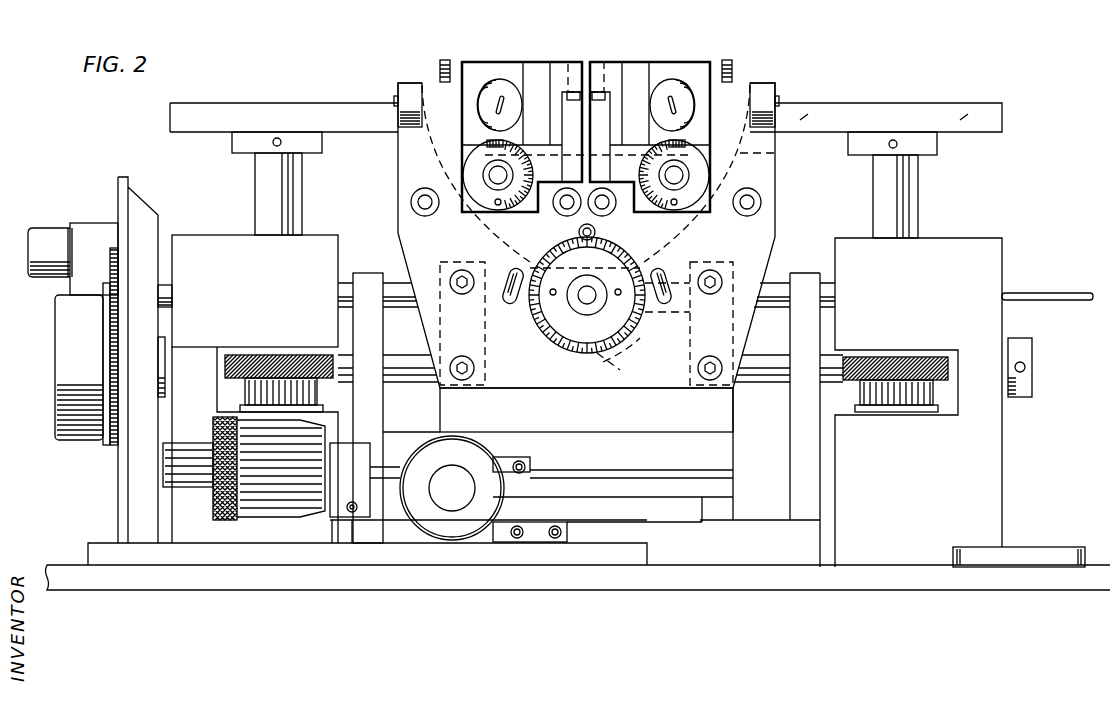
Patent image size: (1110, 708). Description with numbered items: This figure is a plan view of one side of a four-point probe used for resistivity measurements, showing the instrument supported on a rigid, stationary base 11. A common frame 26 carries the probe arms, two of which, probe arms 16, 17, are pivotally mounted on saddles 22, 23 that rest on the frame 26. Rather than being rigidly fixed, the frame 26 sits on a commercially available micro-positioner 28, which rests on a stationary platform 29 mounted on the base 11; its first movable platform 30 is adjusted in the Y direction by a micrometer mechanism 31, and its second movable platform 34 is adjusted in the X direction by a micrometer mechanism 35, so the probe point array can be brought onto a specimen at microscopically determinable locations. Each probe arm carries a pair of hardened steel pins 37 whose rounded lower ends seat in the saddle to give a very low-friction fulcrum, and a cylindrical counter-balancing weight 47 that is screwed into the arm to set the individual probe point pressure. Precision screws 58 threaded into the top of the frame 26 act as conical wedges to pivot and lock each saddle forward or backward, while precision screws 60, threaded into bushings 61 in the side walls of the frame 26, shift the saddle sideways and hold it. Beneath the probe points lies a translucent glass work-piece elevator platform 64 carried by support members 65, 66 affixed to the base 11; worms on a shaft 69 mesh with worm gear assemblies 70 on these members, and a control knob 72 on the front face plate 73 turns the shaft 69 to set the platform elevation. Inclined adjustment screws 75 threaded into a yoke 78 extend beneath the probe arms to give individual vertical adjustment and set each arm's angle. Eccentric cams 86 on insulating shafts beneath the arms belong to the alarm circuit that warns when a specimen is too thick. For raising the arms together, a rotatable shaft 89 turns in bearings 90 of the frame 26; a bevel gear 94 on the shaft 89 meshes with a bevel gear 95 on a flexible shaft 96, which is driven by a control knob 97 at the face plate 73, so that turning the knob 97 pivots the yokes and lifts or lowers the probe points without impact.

The base 11 is at (511, 579).
The probe arm 16 is at (698, 62).
The probe arm 17 is at (474, 62).
The saddle 22 is at (604, 121).
The saddle 23 is at (568, 121).
The frame 26 is at (776, 196).
The micro-positioner 28 is at (780, 458).
The stationary platform 29 is at (812, 531).
The first movable platform 30 is at (733, 497).
The micrometer mechanism 31 is at (463, 455).
The second movable platform 34 is at (722, 466).
The micrometer mechanism 35 is at (214, 505).
The hardened steel pins 37 is at (599, 62).
The counter-balancing weight 47 is at (500, 96).
The precision screws 58 is at (446, 60).
The precision screws 60 is at (427, 211).
The bushings 61 is at (420, 197).
The work-piece elevator platform 64 is at (905, 103).
The support member 65 is at (913, 195).
The support member 66 is at (255, 184).
The shaft 69 is at (396, 356).
The worm gear assemblies 70 is at (240, 355).
The control knob 72 is at (70, 364).
The front face plate 73 is at (118, 179).
The inclined adjustment screws 75 is at (510, 305).
The yoke 78 is at (775, 153).
The eccentric cams 86 is at (490, 203).
The rotatable shaft 89 is at (590, 303).
The bearings 90 is at (585, 308).
The bevel gear 94 is at (619, 371).
The bevel gear 95 is at (640, 338).
The flexible shaft 96 is at (1046, 293).
The control knob 97 is at (78, 223).